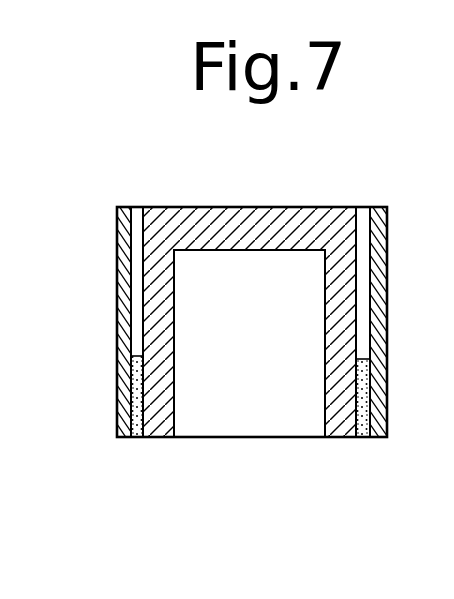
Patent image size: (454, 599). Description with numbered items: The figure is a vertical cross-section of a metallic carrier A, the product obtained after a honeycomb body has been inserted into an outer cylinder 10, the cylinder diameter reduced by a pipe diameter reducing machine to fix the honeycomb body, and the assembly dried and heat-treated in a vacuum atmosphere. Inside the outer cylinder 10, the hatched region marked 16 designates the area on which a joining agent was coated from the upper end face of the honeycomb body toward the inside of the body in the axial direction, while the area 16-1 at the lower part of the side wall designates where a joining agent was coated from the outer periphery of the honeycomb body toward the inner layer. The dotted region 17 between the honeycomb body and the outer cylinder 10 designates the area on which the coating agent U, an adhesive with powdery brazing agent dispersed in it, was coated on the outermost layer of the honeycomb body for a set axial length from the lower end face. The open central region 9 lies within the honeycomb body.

The outer cylinder 10 is at (380, 265).
The joining agent coated area 16 is at (270, 222).
The joining agent coated area 16-1 is at (340, 415).
The cavity 9 is at (245, 410).
The coating agent coated area 17 is at (137, 412).
The metallic carrier A is at (367, 189).